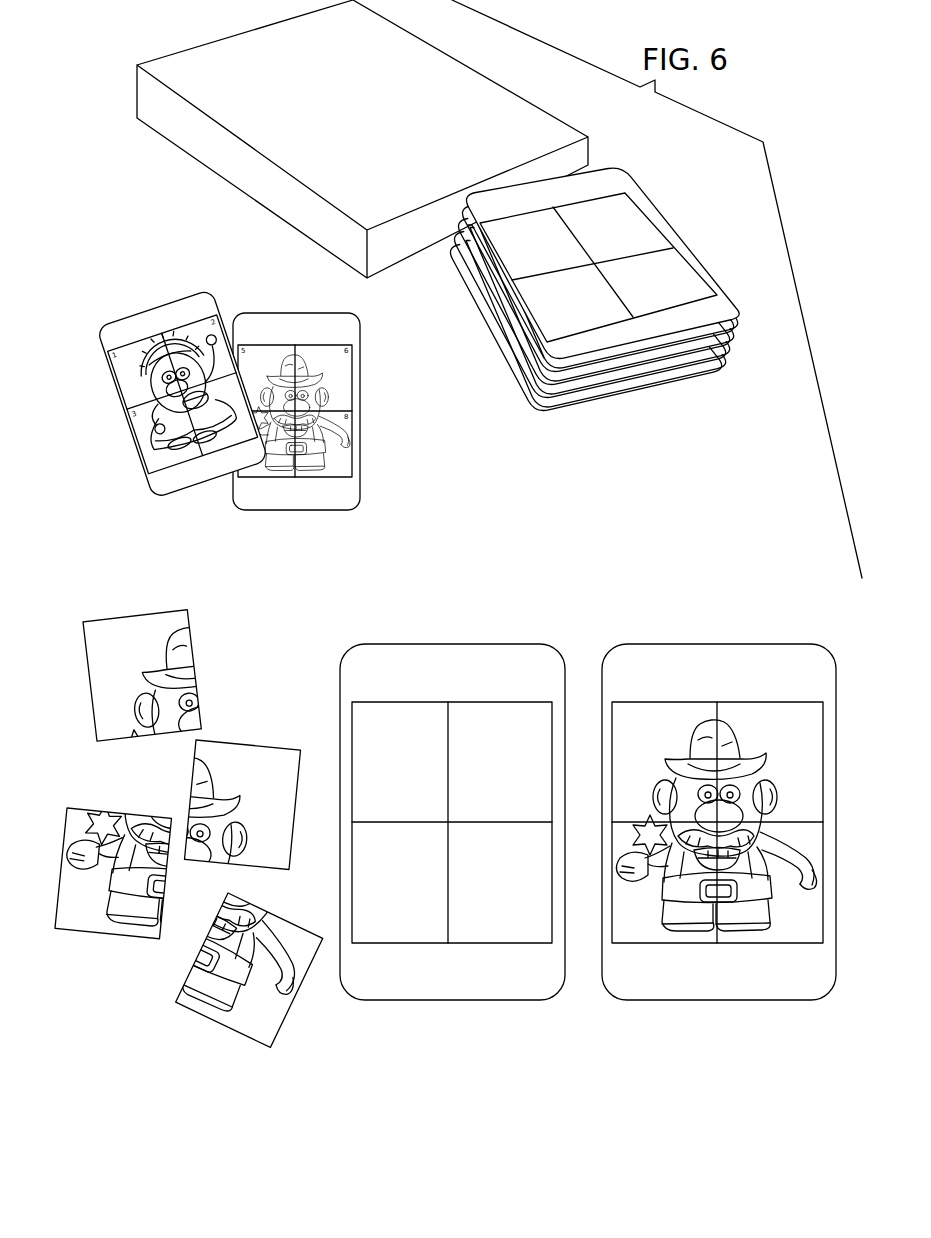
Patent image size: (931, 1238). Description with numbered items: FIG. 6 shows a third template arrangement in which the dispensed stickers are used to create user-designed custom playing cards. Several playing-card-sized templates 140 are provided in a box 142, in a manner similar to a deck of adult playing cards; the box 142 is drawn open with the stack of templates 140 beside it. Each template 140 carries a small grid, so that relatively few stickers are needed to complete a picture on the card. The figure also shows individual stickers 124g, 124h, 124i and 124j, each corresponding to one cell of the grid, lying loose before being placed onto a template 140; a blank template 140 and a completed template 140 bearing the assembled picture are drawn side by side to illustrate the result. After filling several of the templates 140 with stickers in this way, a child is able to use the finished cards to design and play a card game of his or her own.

The box 142 is at (558, 131).
The templates 140 is at (731, 312).
The card segment 124g is at (178, 622).
The card segment 124h is at (235, 747).
The card segment 124i is at (107, 813).
The card segment 124j is at (273, 1030).